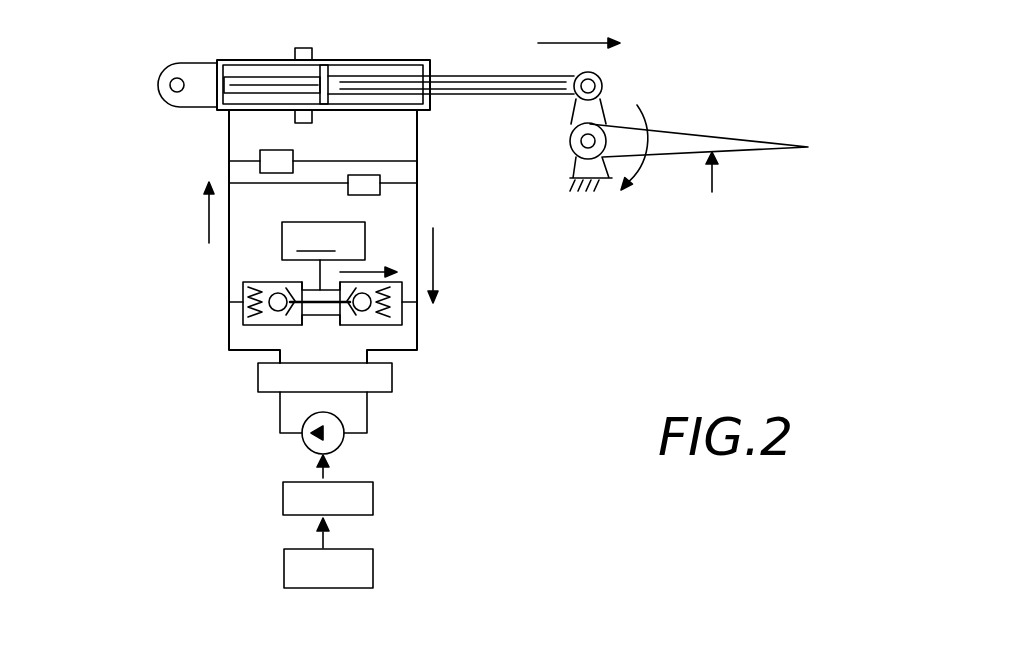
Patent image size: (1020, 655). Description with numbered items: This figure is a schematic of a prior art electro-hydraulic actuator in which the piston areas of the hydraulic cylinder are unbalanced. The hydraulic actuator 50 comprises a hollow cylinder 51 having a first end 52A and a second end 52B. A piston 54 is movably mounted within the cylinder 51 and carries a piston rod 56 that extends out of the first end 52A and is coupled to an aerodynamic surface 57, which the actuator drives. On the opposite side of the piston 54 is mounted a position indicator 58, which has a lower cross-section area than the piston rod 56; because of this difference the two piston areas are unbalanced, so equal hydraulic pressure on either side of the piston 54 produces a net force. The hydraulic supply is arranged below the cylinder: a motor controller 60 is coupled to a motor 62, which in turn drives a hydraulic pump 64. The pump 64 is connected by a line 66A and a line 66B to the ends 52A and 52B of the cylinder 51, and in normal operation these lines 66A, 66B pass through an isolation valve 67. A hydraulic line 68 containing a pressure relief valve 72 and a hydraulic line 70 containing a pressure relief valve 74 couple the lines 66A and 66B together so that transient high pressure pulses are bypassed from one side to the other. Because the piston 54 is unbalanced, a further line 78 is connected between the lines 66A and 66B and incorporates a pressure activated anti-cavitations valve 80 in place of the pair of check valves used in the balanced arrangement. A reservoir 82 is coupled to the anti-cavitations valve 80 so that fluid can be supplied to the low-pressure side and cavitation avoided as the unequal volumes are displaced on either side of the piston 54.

The hydraulic actuator 50 is at (391, 50).
The hollow cylinder 51 is at (358, 60).
The first end 52A is at (430, 65).
The second end 52B is at (219, 63).
The piston 54 is at (329, 63).
The piston rod 56 is at (503, 98).
The aerodynamic surface 57 is at (703, 130).
The position indicator 58 is at (259, 77).
The motor controller 60 is at (373, 567).
The motor 62 is at (373, 498).
The hydraulic pump 64 is at (343, 445).
The line 66A is at (420, 221).
The line 66B is at (229, 263).
The isolation valve 67 is at (392, 375).
The hydraulic line 68 is at (312, 184).
The hydraulic line 70 is at (240, 160).
The pressure relief valve 72 is at (372, 195).
The pressure relief valve 74 is at (273, 150).
The line 78 is at (405, 304).
The pressure activated anti-cavitations valve 80 is at (258, 325).
The reservoir 82 is at (339, 256).